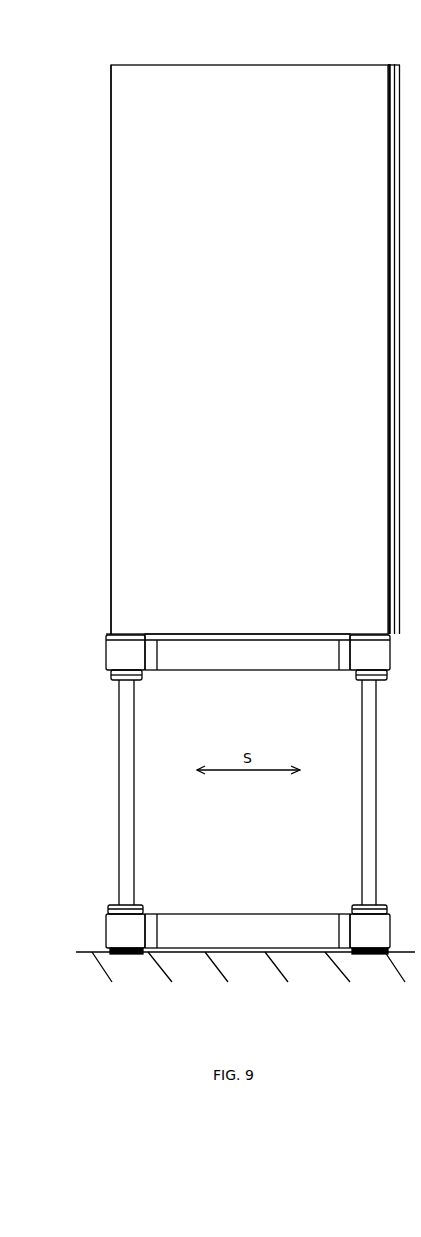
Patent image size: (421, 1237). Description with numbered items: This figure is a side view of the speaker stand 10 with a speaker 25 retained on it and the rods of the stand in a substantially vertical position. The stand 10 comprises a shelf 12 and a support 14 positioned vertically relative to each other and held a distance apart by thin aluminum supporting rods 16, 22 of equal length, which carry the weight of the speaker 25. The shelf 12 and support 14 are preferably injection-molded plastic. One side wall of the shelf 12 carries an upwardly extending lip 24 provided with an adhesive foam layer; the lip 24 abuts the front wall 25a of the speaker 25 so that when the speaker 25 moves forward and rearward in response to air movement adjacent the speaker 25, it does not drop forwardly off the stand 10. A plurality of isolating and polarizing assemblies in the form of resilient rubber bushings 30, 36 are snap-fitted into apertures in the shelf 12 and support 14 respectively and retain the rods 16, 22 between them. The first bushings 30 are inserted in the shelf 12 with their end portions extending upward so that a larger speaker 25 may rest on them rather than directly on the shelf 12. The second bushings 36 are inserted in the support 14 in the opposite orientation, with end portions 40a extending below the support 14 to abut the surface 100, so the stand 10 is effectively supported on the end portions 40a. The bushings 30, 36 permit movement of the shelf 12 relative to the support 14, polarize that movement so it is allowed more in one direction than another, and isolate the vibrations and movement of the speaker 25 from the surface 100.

The speaker stand 10 is at (85, 725).
The shelf 12 is at (234, 646).
The support 14 is at (247, 935).
The supporting rod 16 is at (124, 796).
The supporting rod 22 is at (362, 752).
The lip 24 is at (108, 633).
The speaker 25 is at (173, 212).
The front wall 25a is at (111, 306).
The first assemblies (resilient bushings) 30 is at (143, 676).
The second assemblies (resilient bushings) 36 is at (108, 907).
The end portion 40a is at (112, 954).
The surface 100 is at (147, 995).